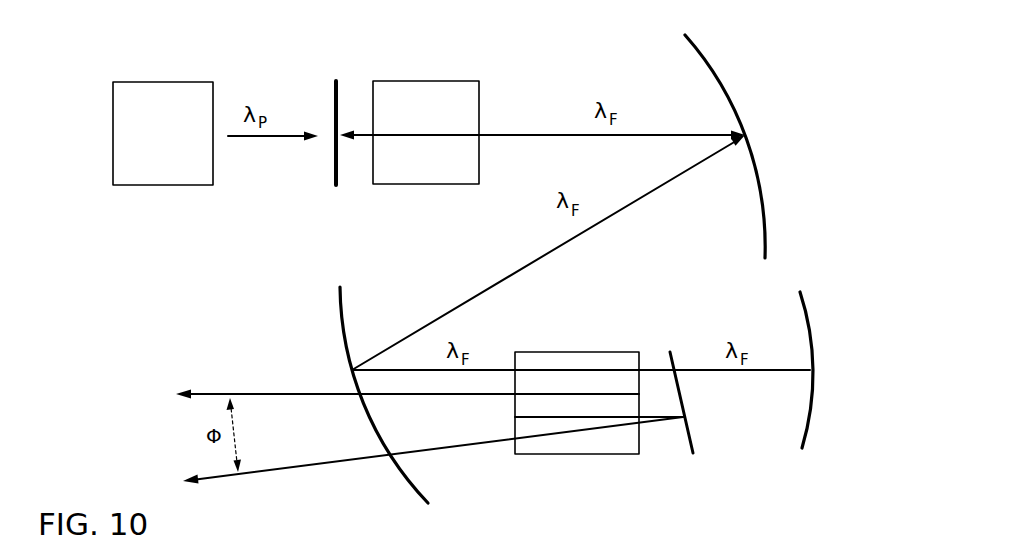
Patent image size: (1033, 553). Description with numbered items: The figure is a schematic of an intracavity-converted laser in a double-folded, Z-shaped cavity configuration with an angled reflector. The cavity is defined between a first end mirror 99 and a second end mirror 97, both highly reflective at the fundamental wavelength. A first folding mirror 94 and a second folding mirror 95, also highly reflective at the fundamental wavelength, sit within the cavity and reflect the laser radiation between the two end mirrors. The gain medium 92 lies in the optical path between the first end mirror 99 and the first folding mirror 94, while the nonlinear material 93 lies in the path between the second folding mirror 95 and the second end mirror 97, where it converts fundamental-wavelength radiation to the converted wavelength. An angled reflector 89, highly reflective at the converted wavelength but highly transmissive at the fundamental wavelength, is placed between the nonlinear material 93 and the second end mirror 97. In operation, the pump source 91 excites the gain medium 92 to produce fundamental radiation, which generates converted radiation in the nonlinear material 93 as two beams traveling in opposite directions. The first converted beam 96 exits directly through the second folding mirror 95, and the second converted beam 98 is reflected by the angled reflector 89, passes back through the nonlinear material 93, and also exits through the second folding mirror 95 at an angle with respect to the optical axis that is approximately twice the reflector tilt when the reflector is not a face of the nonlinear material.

The pump source 91 is at (162, 82).
The first end mirror 99 is at (337, 96).
The gain medium 92 is at (413, 81).
The first folding mirror 94 is at (762, 218).
The second folding mirror 95 is at (343, 301).
The first converted beam 96 is at (305, 393).
The nonlinear material 93 is at (598, 454).
The second converted beam 98 is at (333, 466).
The angled reflector 89 is at (690, 444).
The second end mirror 97 is at (800, 422).